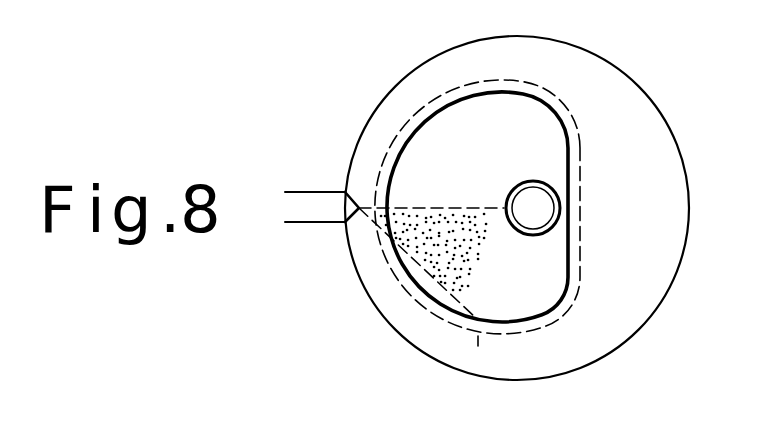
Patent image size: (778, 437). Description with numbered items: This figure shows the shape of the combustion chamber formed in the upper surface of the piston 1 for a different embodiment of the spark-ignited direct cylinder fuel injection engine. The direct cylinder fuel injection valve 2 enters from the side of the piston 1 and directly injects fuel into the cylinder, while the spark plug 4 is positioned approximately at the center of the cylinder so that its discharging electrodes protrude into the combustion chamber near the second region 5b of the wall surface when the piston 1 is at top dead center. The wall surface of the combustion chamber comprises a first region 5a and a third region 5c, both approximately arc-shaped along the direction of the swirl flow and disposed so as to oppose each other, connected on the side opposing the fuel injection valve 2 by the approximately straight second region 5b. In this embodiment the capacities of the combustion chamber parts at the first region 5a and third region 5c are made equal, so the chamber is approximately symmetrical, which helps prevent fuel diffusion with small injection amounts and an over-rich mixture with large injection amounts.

The piston 1 is at (627, 305).
The direct cylinder fuel injection valve 2 is at (307, 192).
The spark plug 4 is at (438, 142).
The first region of the wall surface 5a is at (478, 340).
The second region of the wall surface 5b is at (580, 212).
The third region of the wall surface 5c is at (525, 92).